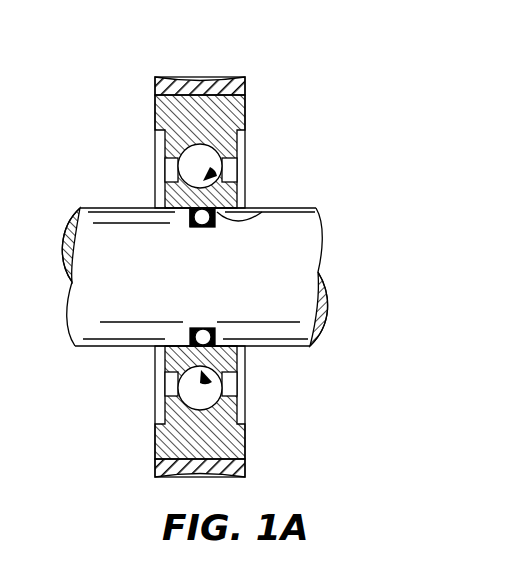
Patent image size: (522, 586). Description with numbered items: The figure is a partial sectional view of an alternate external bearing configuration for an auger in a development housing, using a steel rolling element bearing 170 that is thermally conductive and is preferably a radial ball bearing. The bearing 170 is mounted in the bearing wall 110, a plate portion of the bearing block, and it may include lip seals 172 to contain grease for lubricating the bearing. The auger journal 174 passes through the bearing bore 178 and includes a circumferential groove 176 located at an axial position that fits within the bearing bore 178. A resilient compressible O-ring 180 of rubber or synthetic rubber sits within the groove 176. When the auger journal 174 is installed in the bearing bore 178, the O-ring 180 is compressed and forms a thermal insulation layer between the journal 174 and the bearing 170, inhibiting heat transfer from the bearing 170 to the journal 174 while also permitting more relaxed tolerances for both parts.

The rolling element bearing 170 is at (195, 252).
The bearing wall 110 is at (218, 78).
The lip seals 172 is at (162, 152).
The auger journal 174 is at (113, 338).
The circumferential groove 176 is at (191, 226).
The bearing bore 178 is at (256, 211).
The O-ring 180 is at (218, 224).